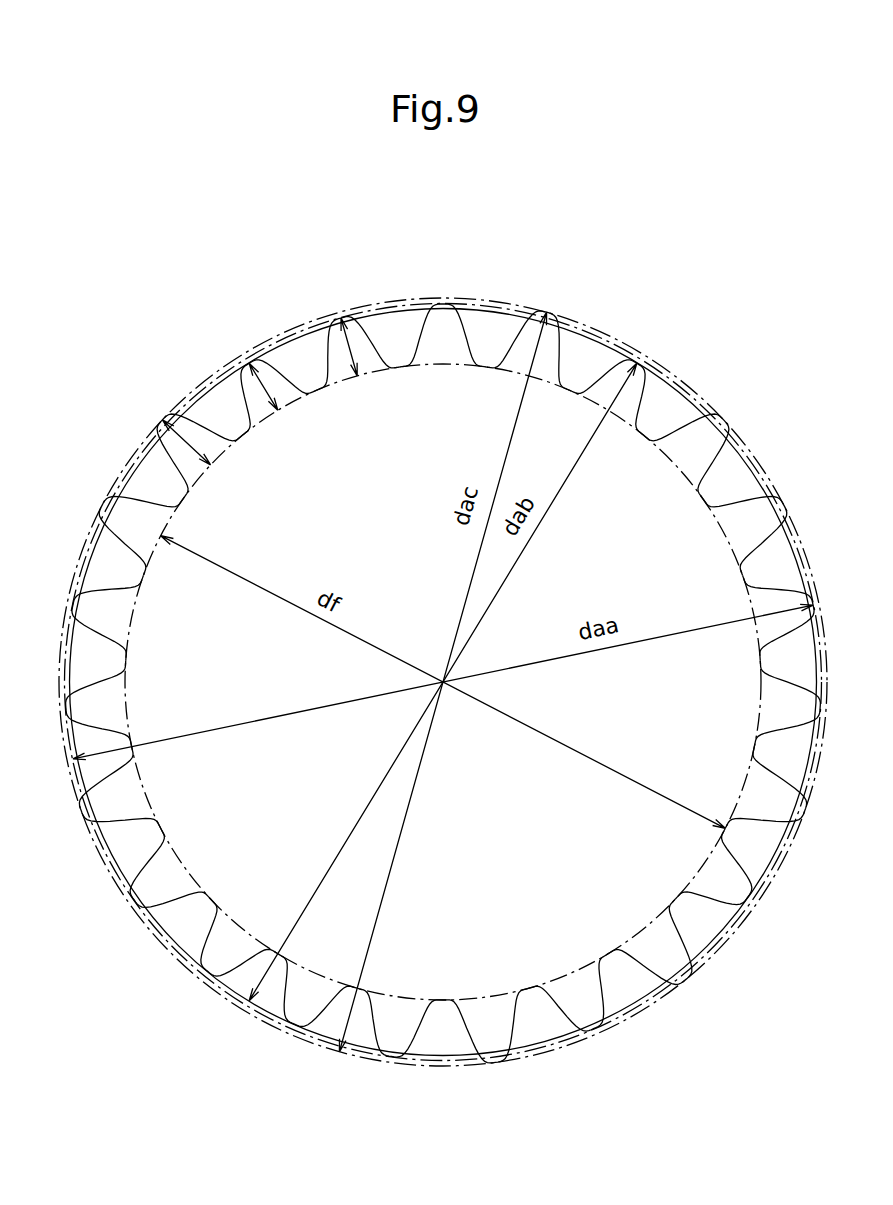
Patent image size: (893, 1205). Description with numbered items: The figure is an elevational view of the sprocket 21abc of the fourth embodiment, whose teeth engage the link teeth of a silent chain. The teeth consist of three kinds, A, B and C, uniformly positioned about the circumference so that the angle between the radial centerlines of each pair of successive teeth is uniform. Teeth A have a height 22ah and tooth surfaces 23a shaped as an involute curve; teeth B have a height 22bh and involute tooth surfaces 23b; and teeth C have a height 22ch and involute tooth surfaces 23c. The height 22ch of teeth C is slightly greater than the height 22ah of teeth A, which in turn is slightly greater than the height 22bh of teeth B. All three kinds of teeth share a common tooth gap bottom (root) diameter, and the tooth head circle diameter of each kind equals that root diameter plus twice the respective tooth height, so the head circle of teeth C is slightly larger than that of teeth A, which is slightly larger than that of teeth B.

The sprocket 21abc is at (433, 654).
The tooth surfaces of teeth A 23a is at (310, 322).
The tooth surfaces of teeth B 23b is at (240, 400).
The tooth surfaces of teeth C 23c is at (155, 462).
The height of teeth A 22ah is at (350, 340).
The height of teeth B 22bh is at (250, 362).
The height of teeth C 22ch is at (166, 421).